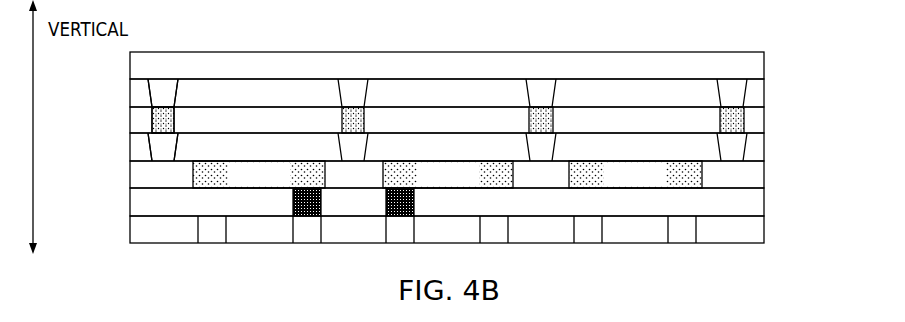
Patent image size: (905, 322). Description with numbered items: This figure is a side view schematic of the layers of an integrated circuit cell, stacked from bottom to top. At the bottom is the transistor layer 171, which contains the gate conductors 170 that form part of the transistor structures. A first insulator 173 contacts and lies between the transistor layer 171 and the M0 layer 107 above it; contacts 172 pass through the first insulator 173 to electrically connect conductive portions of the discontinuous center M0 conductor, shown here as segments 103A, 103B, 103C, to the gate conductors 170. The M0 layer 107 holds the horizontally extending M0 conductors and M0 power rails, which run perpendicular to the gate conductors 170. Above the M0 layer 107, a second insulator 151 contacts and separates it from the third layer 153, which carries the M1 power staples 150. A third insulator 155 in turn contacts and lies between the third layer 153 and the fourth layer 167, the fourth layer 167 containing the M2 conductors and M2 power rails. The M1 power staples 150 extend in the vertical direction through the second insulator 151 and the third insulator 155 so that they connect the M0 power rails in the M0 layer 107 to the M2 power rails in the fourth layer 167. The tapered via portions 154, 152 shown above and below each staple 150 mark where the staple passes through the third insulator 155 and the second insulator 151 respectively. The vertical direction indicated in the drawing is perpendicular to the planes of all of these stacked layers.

The fourth layer 167 is at (766, 65).
The third insulator 155 is at (766, 93).
The third layer 153 is at (766, 120).
The second insulator 151 is at (766, 147).
The upper via 154 is at (147, 88).
The M1 power staples 150 is at (151, 118).
The lower via 152 is at (147, 144).
The M0 layer 107 is at (766, 175).
The first transistor 103A is at (232, 184).
The second transistor 103B is at (421, 184).
The third transistor 103C is at (608, 184).
The first insulator 173 is at (766, 202).
The contacts 172 is at (377, 207).
The transistor layer 171 is at (766, 229).
The gate conductors 170 is at (197, 228).